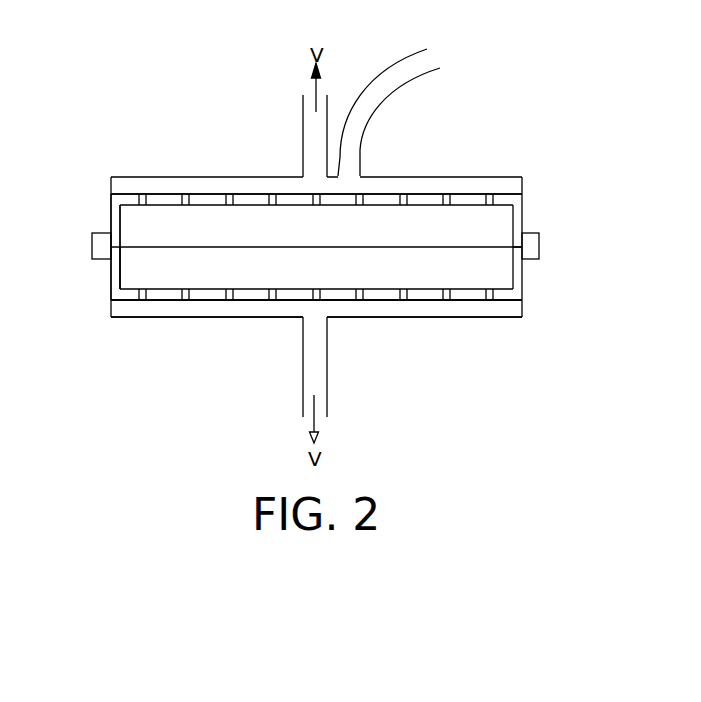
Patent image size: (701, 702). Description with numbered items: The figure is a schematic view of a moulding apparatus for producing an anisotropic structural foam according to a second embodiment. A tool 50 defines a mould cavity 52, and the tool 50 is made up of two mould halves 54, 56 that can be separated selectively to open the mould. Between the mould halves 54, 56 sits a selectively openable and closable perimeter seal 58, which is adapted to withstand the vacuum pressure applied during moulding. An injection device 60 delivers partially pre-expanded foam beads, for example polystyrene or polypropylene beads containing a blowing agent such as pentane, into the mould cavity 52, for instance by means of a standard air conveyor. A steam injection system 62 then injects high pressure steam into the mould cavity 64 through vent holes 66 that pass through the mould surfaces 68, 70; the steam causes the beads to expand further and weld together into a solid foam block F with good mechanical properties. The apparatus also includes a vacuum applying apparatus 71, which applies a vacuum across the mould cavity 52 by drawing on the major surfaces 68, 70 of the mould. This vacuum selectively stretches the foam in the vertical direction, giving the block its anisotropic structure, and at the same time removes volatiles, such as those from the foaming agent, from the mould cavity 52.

The tool 50 is at (503, 192).
The mould cavity 52 is at (424, 218).
The mould half 54 is at (202, 193).
The mould half 56 is at (219, 300).
The perimeter seal 58 is at (540, 247).
The injection device 60 is at (417, 72).
The steam injection system 62 is at (363, 308).
The mould cavity 64 is at (495, 273).
The vent holes 66 is at (240, 200).
The mould surface 68 is at (153, 205).
The mould surface 70 is at (153, 289).
The vacuum applying apparatus 71 is at (310, 107).
The solid foam block F is at (424, 277).